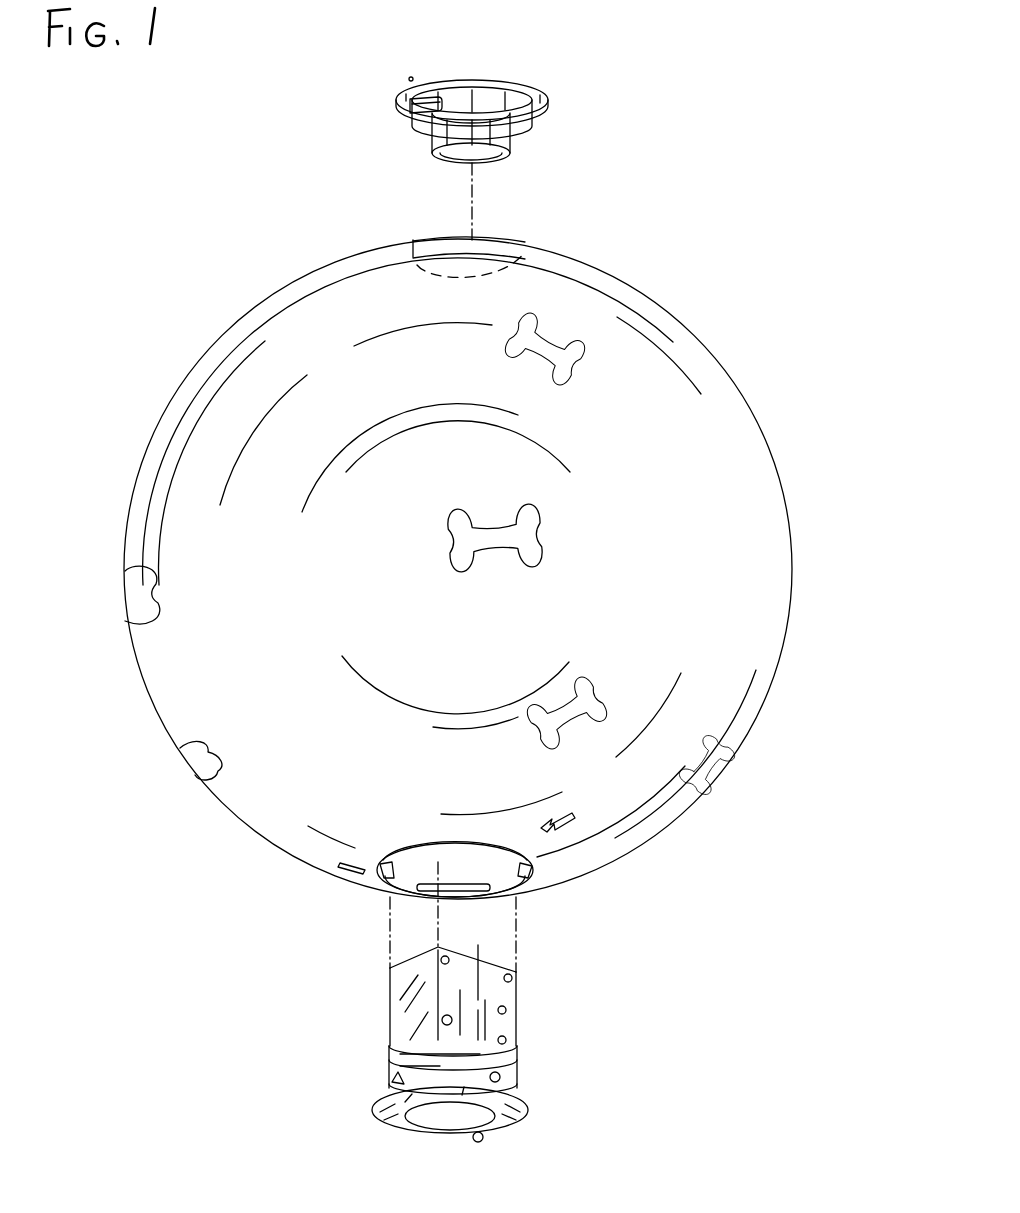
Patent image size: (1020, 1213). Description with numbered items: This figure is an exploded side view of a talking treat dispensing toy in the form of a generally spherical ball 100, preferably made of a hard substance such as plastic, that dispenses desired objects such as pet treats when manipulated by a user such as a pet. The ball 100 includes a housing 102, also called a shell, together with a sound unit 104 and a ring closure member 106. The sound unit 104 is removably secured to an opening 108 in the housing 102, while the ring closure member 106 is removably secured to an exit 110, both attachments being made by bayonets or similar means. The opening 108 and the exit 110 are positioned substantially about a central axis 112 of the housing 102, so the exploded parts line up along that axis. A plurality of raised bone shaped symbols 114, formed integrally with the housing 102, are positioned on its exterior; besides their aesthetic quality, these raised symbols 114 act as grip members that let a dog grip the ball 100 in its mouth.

The ball 100 is at (242, 206).
The housing 102 is at (517, 569).
The sound unit 104 is at (519, 1002).
The ring closure member 106 is at (522, 103).
The opening 108 is at (397, 900).
The exit 110 is at (440, 235).
The central axis 112 is at (536, 201).
The bone shaped symbols 114 is at (756, 770).